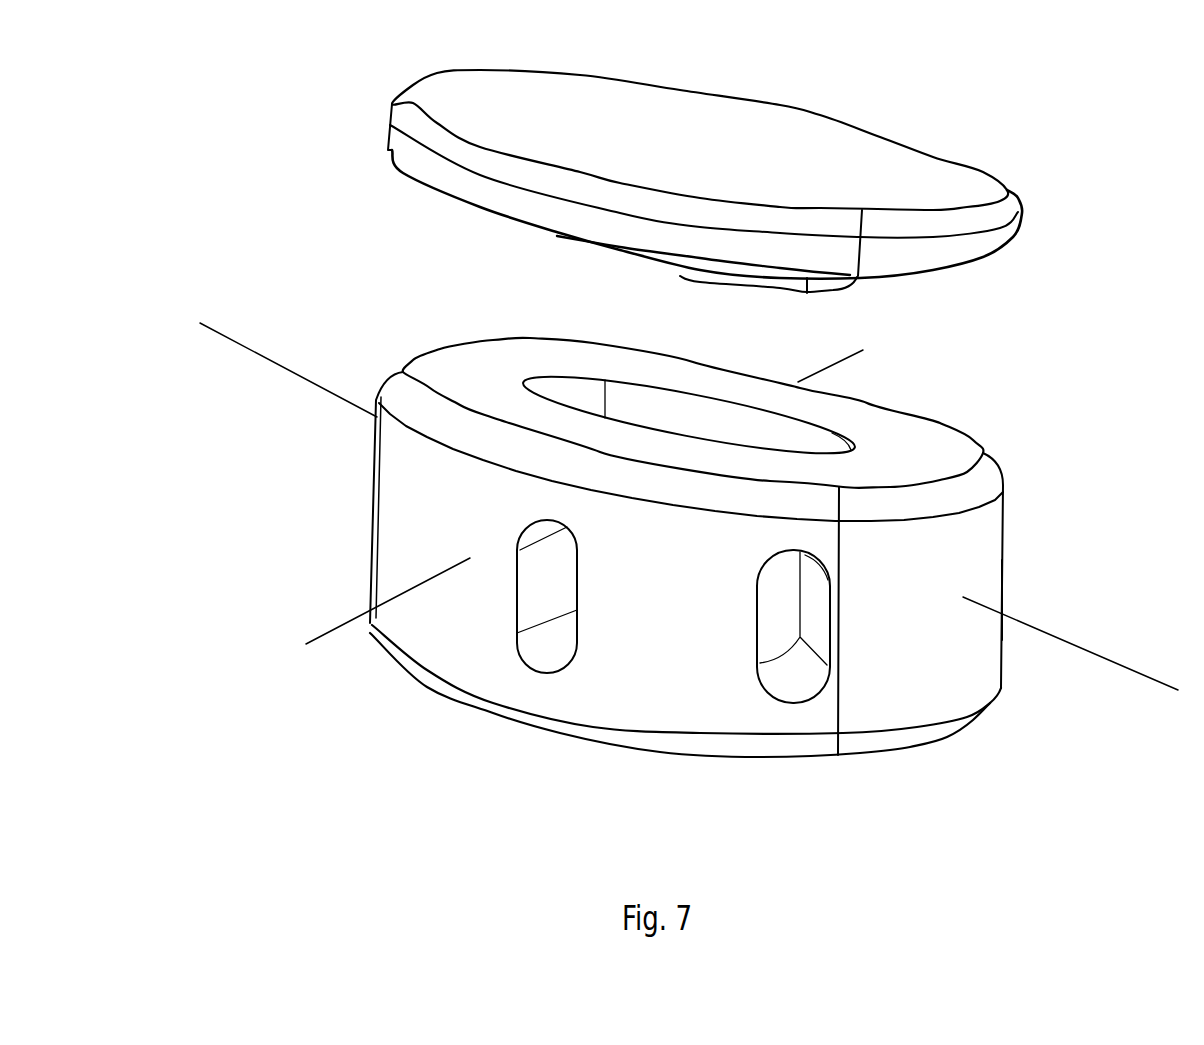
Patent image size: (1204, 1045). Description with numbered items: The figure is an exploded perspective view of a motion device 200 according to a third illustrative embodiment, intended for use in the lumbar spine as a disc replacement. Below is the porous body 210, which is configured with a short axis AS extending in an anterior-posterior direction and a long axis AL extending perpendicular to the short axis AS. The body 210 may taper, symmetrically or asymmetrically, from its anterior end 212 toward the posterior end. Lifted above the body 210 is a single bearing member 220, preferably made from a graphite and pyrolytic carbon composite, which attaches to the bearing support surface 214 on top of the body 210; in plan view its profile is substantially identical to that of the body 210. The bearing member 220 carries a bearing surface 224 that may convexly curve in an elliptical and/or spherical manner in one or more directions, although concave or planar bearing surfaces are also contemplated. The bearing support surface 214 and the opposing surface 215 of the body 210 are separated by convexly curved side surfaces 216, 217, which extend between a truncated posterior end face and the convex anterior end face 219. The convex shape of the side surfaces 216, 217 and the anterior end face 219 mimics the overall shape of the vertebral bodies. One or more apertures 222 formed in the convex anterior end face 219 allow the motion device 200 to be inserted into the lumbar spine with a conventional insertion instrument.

The motion device 200 is at (290, 157).
The porous body 210 is at (400, 583).
The anterior end 212 is at (498, 732).
The bearing support surface 214 is at (913, 447).
The opposing surface 215 is at (890, 747).
The convexly curved side surface 216 is at (374, 470).
The convexly curved side surface 217 is at (983, 557).
The convex anterior end face 219 is at (610, 660).
The bearing member 220 is at (1022, 212).
The apertures 222 is at (530, 598).
The bearing surface 224 is at (735, 118).
The short axis AS is at (838, 363).
The long axis AL is at (1061, 633).